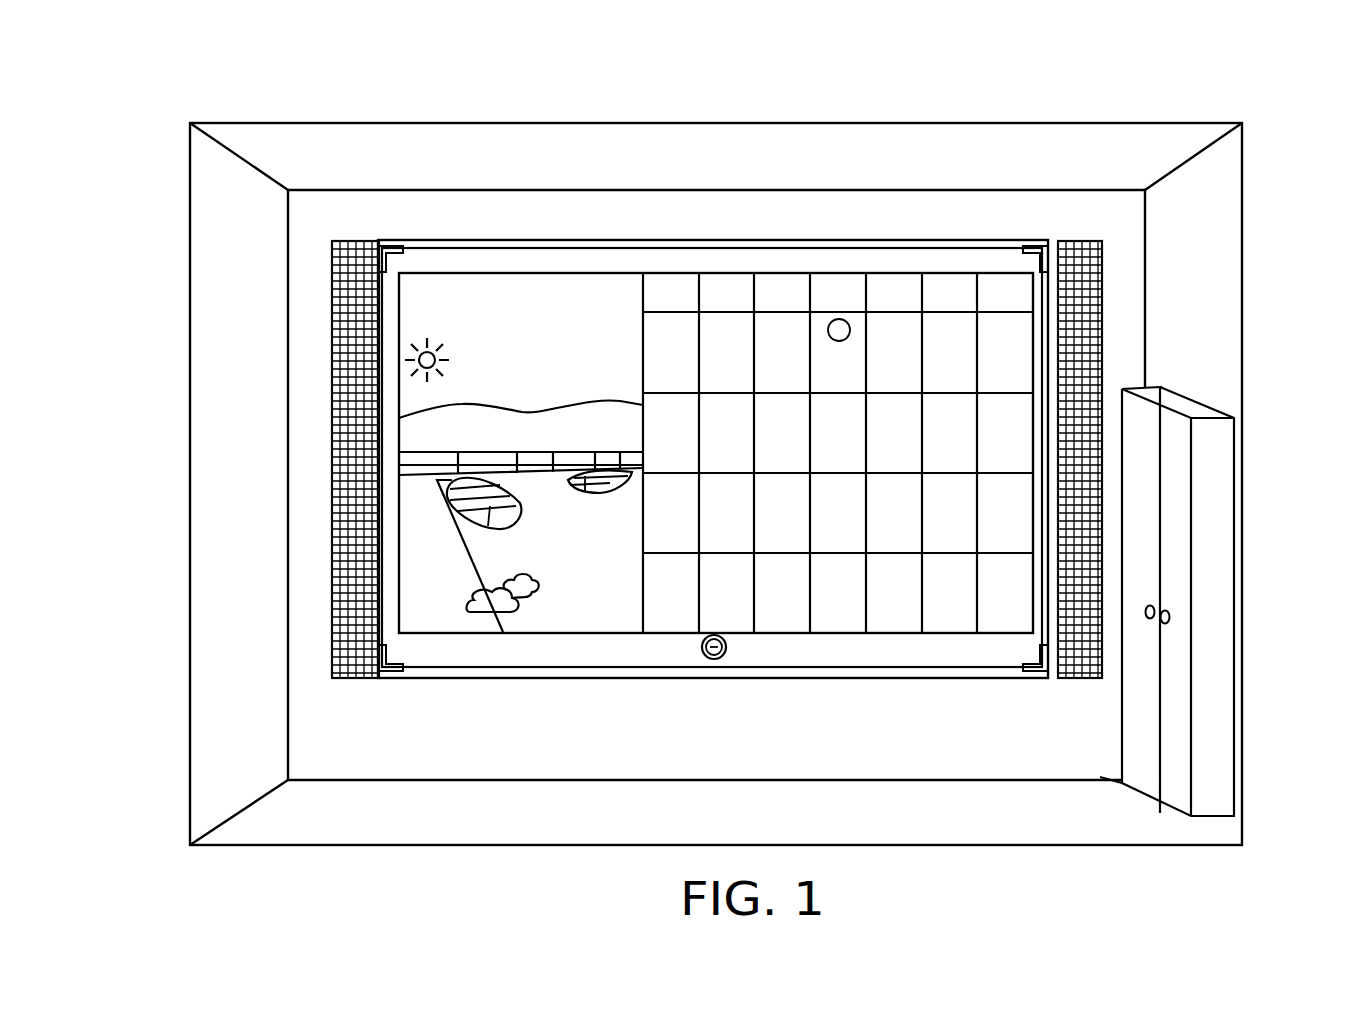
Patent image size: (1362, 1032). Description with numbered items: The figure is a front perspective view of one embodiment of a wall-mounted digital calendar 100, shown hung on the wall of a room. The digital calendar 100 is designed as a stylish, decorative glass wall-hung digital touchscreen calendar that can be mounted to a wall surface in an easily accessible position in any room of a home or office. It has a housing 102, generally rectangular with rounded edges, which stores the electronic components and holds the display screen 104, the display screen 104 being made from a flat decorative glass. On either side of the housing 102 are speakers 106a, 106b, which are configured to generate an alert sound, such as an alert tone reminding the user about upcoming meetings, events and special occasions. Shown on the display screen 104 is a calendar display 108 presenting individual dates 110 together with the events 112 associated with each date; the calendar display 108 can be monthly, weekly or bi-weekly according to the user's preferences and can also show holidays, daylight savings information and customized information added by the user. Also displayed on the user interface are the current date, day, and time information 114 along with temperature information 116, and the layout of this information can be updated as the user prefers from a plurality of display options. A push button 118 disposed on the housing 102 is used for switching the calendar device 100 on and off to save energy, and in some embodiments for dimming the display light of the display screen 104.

The wall-mounted digital calendar 100 is at (222, 192).
The housing 102 is at (942, 240).
The display screen 104 is at (416, 272).
The speaker 106a is at (1075, 317).
The speaker 106b is at (357, 495).
The calendar display 108 is at (968, 273).
The individual dates 110 is at (1007, 445).
The events 112 is at (1002, 633).
The current date, day, and time information 114 is at (497, 303).
The temperature information 116 is at (413, 611).
The push button 118 is at (702, 647).